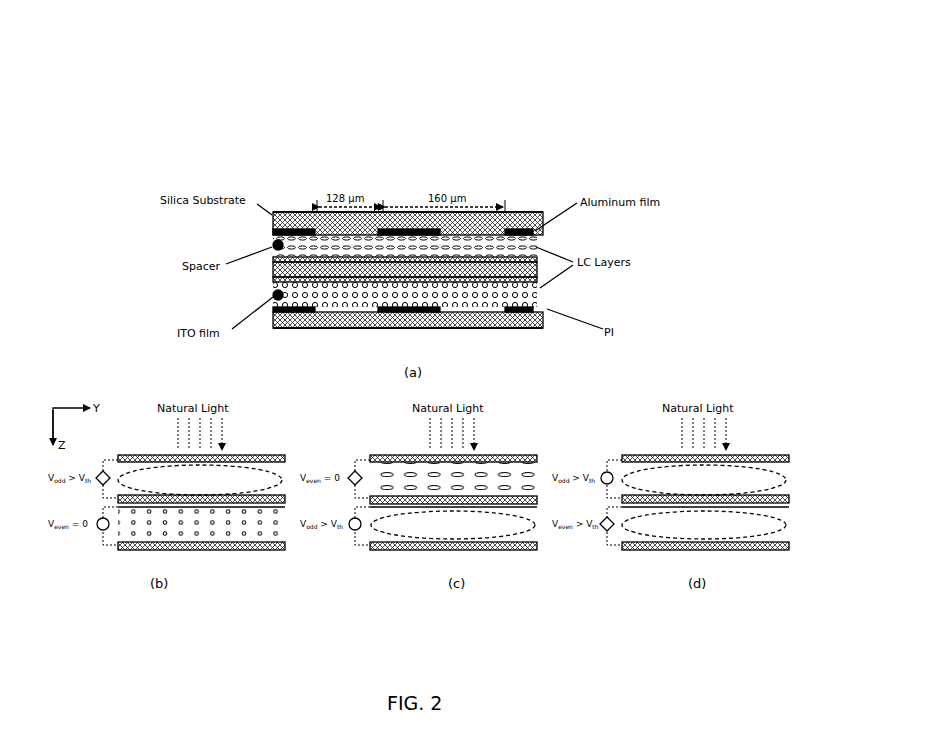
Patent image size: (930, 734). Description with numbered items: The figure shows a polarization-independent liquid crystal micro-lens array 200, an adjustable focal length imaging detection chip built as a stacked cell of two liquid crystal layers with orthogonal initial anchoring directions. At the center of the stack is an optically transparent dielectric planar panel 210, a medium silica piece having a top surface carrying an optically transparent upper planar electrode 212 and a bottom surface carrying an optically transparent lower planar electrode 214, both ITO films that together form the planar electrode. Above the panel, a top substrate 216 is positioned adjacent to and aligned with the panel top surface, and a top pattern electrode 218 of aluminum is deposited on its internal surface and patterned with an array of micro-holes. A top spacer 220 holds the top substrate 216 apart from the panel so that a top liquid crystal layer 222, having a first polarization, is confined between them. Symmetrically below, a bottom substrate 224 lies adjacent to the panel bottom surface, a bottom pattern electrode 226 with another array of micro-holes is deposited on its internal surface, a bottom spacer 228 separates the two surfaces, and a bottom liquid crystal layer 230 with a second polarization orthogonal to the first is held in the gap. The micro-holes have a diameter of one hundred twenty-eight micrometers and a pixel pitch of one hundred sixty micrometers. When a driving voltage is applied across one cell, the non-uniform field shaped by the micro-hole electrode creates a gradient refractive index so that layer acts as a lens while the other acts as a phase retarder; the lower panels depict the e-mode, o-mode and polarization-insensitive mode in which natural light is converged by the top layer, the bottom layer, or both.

The liquid crystal lens device 200 is at (157, 72).
The dielectric planar panel 210 is at (310, 272).
The upper planar electrode 212 is at (380, 257).
The lower planar electrode 214 is at (425, 276).
The top substrate 216 is at (483, 231).
The top pattern electrode 218 is at (515, 229).
The top spacer 220 is at (270, 215).
The top liquid crystal layer 222 is at (295, 230).
The bottom substrate 224 is at (522, 322).
The bottom pattern electrode 226 is at (533, 310).
The bottom spacer 228 is at (313, 298).
The bottom liquid crystal layer 230 is at (317, 302).